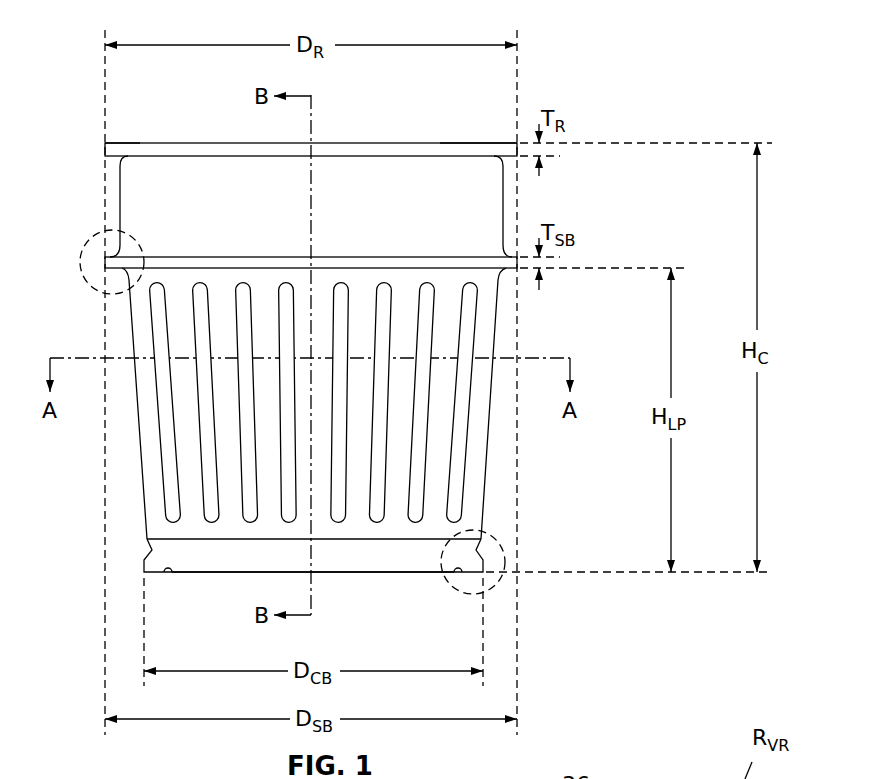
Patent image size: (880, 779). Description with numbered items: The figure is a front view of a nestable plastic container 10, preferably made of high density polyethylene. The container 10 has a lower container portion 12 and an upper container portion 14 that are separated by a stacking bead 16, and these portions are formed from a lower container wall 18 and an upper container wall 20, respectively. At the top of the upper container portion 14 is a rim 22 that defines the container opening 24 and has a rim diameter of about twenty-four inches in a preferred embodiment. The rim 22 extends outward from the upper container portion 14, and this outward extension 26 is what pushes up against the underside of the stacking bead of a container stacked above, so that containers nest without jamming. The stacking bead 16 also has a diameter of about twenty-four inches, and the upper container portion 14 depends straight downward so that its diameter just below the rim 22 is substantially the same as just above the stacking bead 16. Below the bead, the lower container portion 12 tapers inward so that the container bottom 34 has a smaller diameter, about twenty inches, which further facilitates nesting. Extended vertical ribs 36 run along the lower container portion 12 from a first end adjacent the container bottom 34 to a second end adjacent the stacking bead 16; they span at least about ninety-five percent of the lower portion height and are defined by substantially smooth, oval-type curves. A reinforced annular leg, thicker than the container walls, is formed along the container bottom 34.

The container 10 is at (568, 52).
The lower container portion 12 is at (127, 492).
The upper container portion 14 is at (112, 205).
The stacking bead 16 is at (106, 262).
The lower container wall 18 is at (150, 513).
The upper container wall 20 is at (311, 200).
The rim 22 is at (481, 147).
The container opening 24 is at (205, 140).
The outward extension 26 is at (105, 143).
The container bottom 34 is at (398, 574).
The extended vertical ribs 36 is at (160, 420).